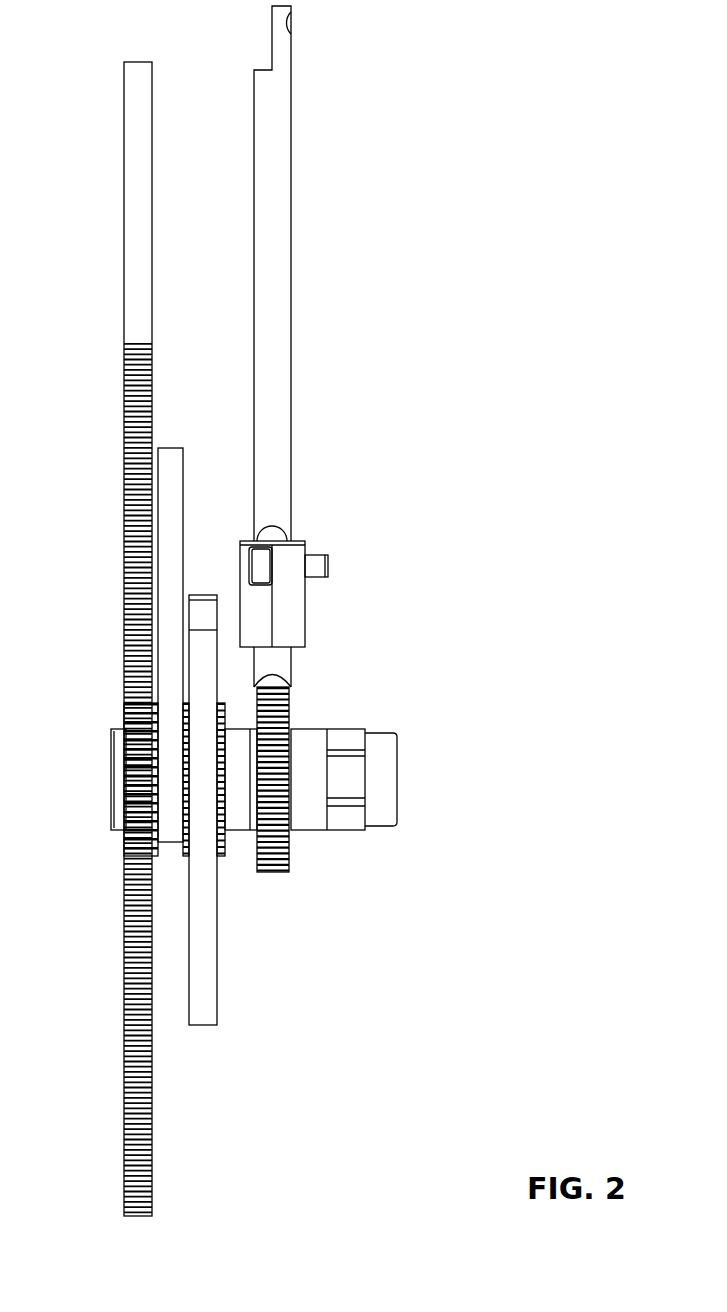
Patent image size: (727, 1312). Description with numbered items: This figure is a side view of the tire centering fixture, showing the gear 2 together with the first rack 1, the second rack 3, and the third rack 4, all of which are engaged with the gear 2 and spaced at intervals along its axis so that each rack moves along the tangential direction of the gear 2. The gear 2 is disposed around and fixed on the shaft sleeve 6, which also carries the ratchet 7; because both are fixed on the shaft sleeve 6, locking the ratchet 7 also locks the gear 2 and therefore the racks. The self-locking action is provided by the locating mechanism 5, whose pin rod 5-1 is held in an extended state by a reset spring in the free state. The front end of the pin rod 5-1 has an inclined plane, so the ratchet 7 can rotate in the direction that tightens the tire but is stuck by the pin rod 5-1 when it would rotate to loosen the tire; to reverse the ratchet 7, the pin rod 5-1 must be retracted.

The first rack 1 is at (135, 1008).
The gear 2 is at (220, 853).
The second rack 3 is at (172, 492).
The third rack 4 is at (205, 1012).
The locating mechanism 5 is at (303, 622).
The pin rod 5-1 is at (275, 215).
The shaft sleeve 6 is at (382, 808).
The ratchet 7 is at (278, 862).